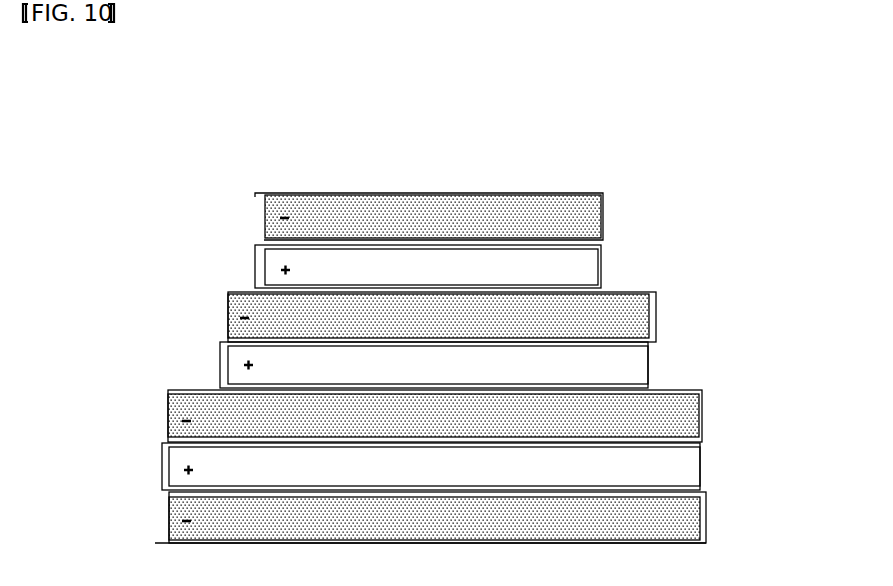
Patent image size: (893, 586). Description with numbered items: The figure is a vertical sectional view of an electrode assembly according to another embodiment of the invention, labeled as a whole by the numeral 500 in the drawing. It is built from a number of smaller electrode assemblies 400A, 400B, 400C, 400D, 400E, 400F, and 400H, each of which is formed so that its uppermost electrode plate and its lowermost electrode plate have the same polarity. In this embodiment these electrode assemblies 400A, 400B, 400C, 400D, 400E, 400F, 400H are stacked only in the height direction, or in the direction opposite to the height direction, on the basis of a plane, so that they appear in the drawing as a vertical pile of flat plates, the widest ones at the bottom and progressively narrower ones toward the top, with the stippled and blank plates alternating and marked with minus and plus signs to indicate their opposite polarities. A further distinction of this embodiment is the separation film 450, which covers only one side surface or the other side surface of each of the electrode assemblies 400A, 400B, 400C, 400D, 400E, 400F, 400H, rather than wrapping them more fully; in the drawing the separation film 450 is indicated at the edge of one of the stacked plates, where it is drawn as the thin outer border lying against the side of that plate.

The electrode assembly 500 is at (73, 107).
The electrode assembly 400H is at (285, 203).
The electrode assembly 400F is at (273, 260).
The electrode assembly 400E is at (250, 303).
The electrode assembly 400D is at (245, 352).
The electrode assembly 400C is at (183, 405).
The electrode assembly 400B is at (183, 456).
The electrode assembly 400A is at (185, 503).
The separation film 450 is at (703, 438).